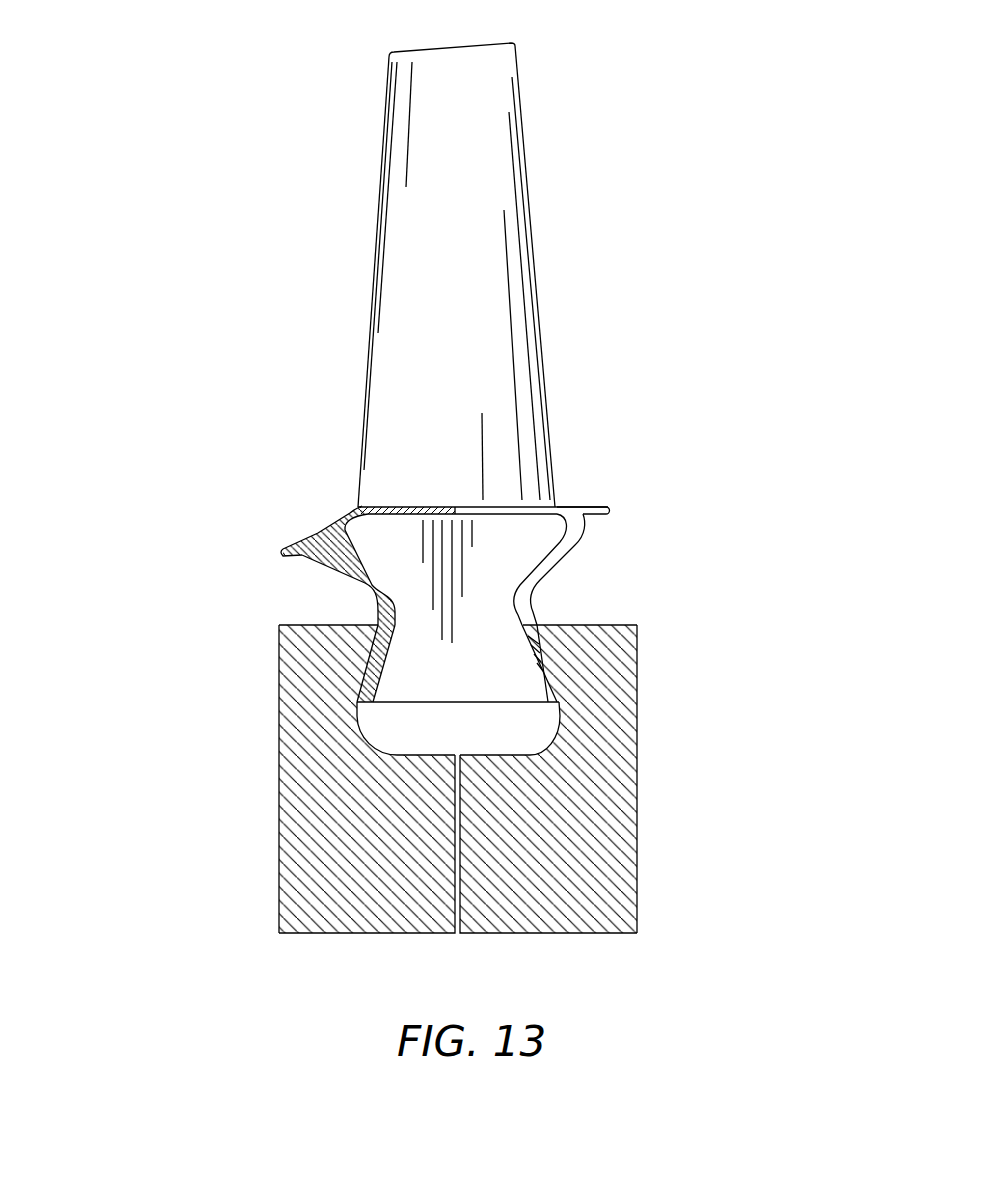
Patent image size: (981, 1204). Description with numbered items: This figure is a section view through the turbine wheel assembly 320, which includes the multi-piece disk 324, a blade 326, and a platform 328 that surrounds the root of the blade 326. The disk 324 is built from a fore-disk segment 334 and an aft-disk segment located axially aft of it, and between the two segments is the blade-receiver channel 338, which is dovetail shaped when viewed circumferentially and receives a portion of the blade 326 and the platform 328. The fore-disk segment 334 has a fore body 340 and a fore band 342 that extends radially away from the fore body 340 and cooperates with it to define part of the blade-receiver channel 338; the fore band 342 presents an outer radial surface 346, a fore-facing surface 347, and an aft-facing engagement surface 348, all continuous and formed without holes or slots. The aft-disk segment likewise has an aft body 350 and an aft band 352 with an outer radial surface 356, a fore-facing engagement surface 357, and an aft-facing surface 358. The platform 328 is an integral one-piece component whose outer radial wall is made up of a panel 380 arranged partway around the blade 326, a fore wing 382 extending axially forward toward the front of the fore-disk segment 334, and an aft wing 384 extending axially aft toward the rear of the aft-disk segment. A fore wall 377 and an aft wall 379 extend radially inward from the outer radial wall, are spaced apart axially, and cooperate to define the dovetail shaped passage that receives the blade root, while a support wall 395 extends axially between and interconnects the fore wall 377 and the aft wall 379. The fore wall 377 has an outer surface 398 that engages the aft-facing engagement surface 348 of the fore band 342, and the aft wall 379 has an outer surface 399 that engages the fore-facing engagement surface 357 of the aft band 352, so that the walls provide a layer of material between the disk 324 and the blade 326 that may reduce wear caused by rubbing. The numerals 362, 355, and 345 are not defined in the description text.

The turbine wheel assembly 320 is at (222, 143).
The blade 326 is at (607, 254).
The airfoil surface 362 is at (530, 170).
The platform 328 is at (559, 502).
The panel 380 is at (490, 503).
The aft wing 384 is at (609, 505).
The fore wing 382 is at (292, 542).
The fore wall 377 is at (374, 618).
The aft-facing engagement surface 348 is at (372, 652).
The outer surface 398 is at (358, 703).
The aft wall 379 is at (539, 613).
The fore-facing engagement surface 357 is at (558, 707).
The outer surface 399 is at (558, 688).
The support wall 395 is at (439, 654).
The root bottom 355 is at (538, 742).
The multi-piece disk 324 is at (647, 836).
The fore body 340 is at (308, 936).
The aft body 350 is at (611, 936).
The outer radial surface 346 is at (297, 622).
The outer radial surface 356 is at (605, 624).
The fore-facing surface 347 is at (278, 648).
The fore band 342 is at (277, 693).
The fore-disk segment 334 is at (277, 771).
The aft-facing surface 358 is at (639, 657).
The aft band 352 is at (639, 693).
The slot wall 345 is at (372, 728).
The blade-receiver channel 338 is at (402, 749).